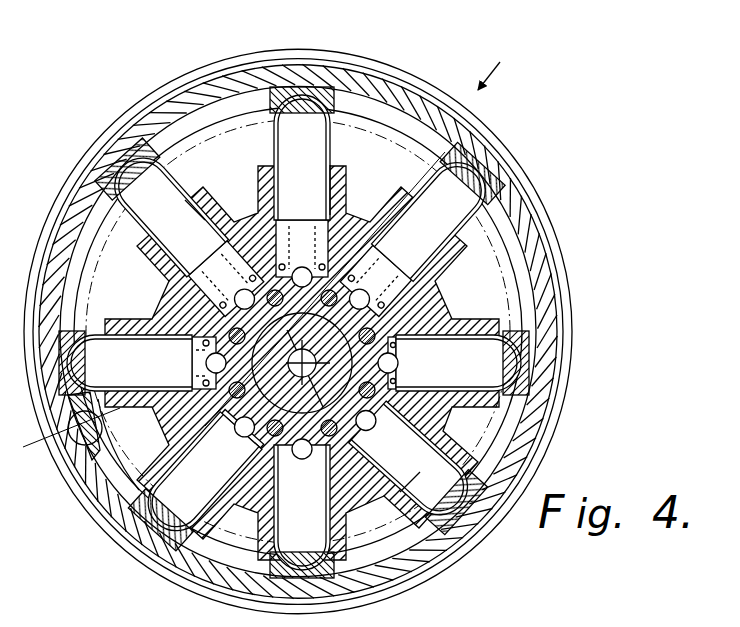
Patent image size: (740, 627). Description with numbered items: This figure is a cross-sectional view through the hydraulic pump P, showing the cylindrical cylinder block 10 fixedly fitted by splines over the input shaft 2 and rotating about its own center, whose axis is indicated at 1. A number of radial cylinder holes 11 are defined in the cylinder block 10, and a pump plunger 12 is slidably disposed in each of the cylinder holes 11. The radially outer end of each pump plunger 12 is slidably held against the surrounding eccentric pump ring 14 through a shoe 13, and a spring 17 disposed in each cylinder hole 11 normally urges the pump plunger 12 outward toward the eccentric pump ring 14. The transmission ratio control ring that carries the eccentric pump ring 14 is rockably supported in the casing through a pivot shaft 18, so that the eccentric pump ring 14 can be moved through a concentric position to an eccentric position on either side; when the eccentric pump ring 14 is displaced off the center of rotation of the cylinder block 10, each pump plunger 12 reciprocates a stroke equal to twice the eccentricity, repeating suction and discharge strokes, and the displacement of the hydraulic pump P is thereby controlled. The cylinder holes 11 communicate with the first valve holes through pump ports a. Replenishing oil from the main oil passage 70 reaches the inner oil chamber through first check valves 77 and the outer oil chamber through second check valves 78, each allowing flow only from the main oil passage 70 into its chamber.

The shaft axis 1 is at (311, 354).
The input shaft 2 is at (302, 363).
The cylinder block 10 is at (440, 312).
The cylinder holes 11 is at (326, 162).
The pump plungers 12 is at (288, 137).
The shoes 13 is at (295, 83).
The eccentric pump ring 14 is at (367, 85).
The springs 17 is at (284, 245).
The pivot shaft 18 is at (70, 462).
The main oil passage 70 is at (325, 289).
The first check valves 77 is at (334, 287).
The second check valves 78 is at (268, 268).
The pump ports a is at (408, 363).
The hydraulic pump P is at (495, 62).